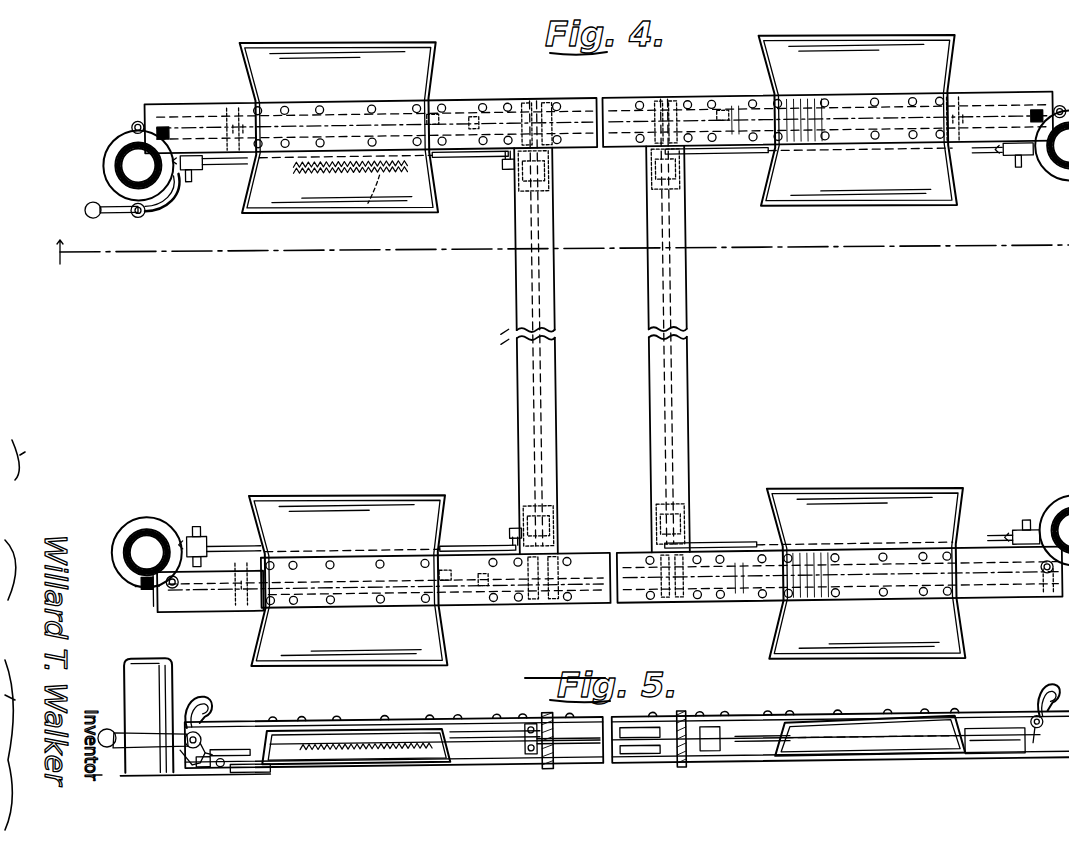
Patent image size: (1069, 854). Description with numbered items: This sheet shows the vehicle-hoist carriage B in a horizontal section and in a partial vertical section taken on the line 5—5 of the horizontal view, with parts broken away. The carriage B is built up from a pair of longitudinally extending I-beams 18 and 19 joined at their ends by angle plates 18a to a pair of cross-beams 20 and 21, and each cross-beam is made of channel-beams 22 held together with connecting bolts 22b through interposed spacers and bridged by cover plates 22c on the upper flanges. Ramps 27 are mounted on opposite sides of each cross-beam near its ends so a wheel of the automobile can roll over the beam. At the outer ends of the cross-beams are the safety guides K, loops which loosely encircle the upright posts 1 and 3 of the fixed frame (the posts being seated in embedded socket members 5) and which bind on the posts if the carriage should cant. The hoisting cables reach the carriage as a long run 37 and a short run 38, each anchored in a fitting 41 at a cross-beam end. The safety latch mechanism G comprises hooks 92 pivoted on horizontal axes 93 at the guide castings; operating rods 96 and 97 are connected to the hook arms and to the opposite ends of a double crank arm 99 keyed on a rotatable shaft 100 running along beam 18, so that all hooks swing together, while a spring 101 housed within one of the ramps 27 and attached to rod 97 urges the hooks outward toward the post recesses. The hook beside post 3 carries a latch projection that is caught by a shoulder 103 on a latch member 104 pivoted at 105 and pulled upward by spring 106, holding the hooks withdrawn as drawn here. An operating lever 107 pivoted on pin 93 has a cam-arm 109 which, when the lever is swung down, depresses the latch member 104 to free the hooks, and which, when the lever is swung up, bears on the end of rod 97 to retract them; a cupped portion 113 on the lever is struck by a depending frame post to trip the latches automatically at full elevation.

In FIG. 4, the upright post 1 is at (150, 530).
In FIG. 4, the upright post 3 is at (122, 156).
In FIG. 4, the socket member 5 is at (558, 252).
In FIG. 4, the longitudinal I-beam 18 is at (557, 383).
In FIG. 5, the longitudinal I-beam 18 is at (550, 768).
In FIG. 4, the angle plate 18a is at (538, 111).
In FIG. 4, the longitudinal I-beam 19 is at (649, 378).
In FIG. 5, the longitudinal I-beam 19 is at (682, 768).
In FIG. 4, the cross-beam 20 is at (623, 100).
In FIG. 5, the cross-beam 20 is at (628, 765).
In FIG. 4, the cross-beam 21 is at (597, 603).
In FIG. 4, the channel-beam 22 is at (728, 112).
In FIG. 5, the connecting bolt 22b is at (240, 772).
In FIG. 4, the cover plate 22c is at (468, 118).
In FIG. 5, the cover plate 22c is at (742, 716).
In FIG. 4, the ramp 27 is at (364, 44).
In FIG. 5, the ramp 27 is at (425, 765).
In FIG. 4, the long run of cable 37 is at (138, 590).
In FIG. 4, the short run of cable 38 is at (164, 123).
In FIG. 4, the fitting 41 is at (172, 124).
In FIG. 4, the hook 92 is at (204, 160).
In FIG. 5, the hook 92 is at (205, 700).
In FIG. 4, the pivot axis 93 is at (190, 178).
In FIG. 5, the pivot axis 93 is at (210, 730).
In FIG. 4, the operating rod 96 is at (770, 156).
In FIG. 5, the operating rod 96 is at (758, 745).
In FIG. 4, the operating rod 97 is at (473, 156).
In FIG. 5, the operating rod 97 is at (470, 728).
In FIG. 4, the double crank arm 99 is at (506, 164).
In FIG. 5, the double crank arm 99 is at (525, 745).
In FIG. 4, the rotatable shaft 100 is at (516, 232).
In FIG. 5, the rotatable shaft 100 is at (535, 752).
In FIG. 4, the spring 101 is at (382, 200).
In FIG. 5, the spring 101 is at (148, 725).
In FIG. 5, the shoulder 103 is at (200, 768).
In FIG. 5, the latch member 104 is at (212, 770).
In FIG. 5, the pivot 105 is at (223, 762).
In FIG. 5, the spring 106 is at (175, 768).
In FIG. 4, the operating lever 107 is at (111, 218).
In FIG. 5, the operating lever 107 is at (143, 738).
In FIG. 5, the cam-arm 109 is at (185, 760).
In FIG. 4, the cupped portion 113 is at (140, 211).
In FIG. 5, the cupped portion 113 is at (140, 712).
In FIG. 4, the carriage B is at (693, 378).
In FIG. 5, the carriage B is at (733, 712).
In FIG. 4, the safety latch mechanism G is at (196, 182).
In FIG. 5, the safety latch mechanism G is at (224, 713).
In FIG. 4, the safety guide K is at (103, 148).